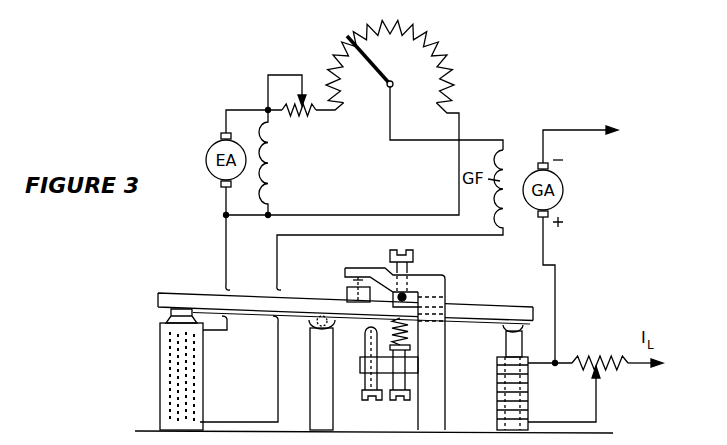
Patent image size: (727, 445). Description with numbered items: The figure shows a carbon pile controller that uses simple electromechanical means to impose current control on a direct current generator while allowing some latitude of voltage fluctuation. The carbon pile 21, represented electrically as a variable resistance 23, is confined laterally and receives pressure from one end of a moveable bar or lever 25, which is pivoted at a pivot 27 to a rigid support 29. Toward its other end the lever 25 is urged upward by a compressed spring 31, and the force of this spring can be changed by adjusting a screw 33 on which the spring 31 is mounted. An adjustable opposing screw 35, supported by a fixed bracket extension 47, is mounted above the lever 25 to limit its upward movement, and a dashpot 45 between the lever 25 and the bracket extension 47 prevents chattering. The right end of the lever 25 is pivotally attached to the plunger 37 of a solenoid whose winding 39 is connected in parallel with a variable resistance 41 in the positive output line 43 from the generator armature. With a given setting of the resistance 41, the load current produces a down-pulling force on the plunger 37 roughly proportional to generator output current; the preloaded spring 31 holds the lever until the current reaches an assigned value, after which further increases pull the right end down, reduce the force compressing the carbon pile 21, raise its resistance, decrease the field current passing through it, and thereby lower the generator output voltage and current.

The carbon pile 21 is at (160, 340).
The variable resistance 23 is at (172, 372).
The moveable bar or lever 25 is at (198, 296).
The pivot 27 is at (318, 327).
The rigid support 29 is at (311, 386).
The compressed spring 31 is at (426, 335).
The screw 33 is at (394, 401).
The adjustable opposing screw 35 is at (414, 257).
The plunger 37 is at (508, 347).
The winding 39 is at (497, 385).
The variable resistance 41 is at (596, 356).
The positive output line 43 is at (556, 289).
The dashpot 45 is at (347, 292).
The fixed bracket extension 47 is at (358, 268).